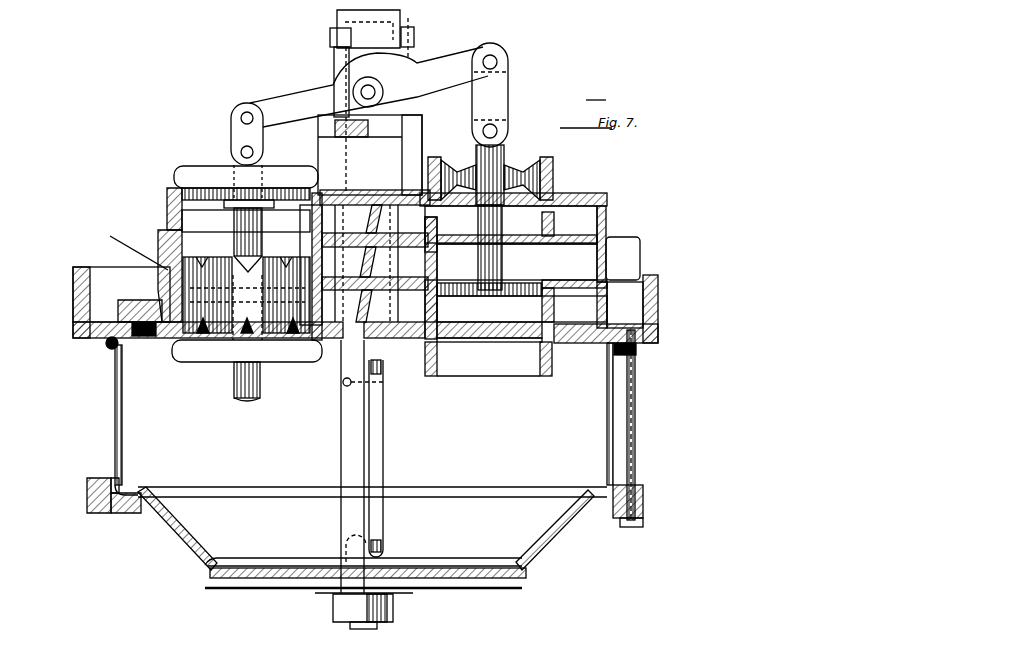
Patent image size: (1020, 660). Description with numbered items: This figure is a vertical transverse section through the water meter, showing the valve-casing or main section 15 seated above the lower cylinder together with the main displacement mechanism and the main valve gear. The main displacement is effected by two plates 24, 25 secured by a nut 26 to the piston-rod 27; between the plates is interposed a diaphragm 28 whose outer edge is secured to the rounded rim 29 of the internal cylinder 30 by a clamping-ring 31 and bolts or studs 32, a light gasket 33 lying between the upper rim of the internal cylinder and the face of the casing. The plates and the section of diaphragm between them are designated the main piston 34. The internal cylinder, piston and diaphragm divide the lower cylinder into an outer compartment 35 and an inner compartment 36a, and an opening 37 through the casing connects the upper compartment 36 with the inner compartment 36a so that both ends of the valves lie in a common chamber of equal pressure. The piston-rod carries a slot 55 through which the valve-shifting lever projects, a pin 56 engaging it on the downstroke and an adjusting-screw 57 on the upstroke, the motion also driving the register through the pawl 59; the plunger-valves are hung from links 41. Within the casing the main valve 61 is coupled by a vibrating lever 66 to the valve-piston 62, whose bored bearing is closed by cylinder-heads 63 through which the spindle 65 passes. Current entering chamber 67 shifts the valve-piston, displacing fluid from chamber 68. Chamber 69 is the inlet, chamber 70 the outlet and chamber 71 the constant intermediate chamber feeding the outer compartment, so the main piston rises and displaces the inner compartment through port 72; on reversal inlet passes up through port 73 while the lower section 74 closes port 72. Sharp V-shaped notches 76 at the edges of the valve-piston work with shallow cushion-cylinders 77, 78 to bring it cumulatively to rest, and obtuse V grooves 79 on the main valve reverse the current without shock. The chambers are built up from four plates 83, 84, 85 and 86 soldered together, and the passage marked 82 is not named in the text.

The main section 15 is at (668, 308).
The plate 24 is at (230, 562).
The plate 25 is at (218, 590).
The nut 26 is at (396, 614).
The piston-rod 27 is at (352, 466).
The diaphragm 28 is at (204, 574).
The rounded rim 29 is at (150, 492).
The internal cylinder 30 is at (114, 418).
The clamping-ring 31 is at (94, 513).
The bolts or studs 32 is at (636, 468).
The gasket 33 is at (106, 346).
The main piston 34 is at (272, 578).
The outer compartment 35 is at (500, 628).
The compartment 36 is at (158, 108).
The inner compartment 36a is at (232, 443).
The opening 37 is at (140, 323).
The links 41 is at (369, 121).
The slot 55 is at (380, 442).
The pin 56 is at (342, 382).
The adjusting-screw 57 is at (384, 540).
The pawl 59 is at (372, 101).
The main valve 61 is at (490, 217).
The valve-piston 62 is at (247, 307).
The cylinder-heads 63 is at (247, 264).
The spindle 65 is at (262, 165).
The vibrating lever 66 is at (369, 87).
The chamber 67 is at (322, 229).
The chamber 68 is at (334, 309).
The inlet chamber 69 is at (576, 229).
The outlet chamber 70 is at (582, 325).
The intermediate chamber 71 is at (576, 275).
The port 72 is at (530, 372).
The port 73 is at (525, 165).
The lower section of main valve 74 is at (486, 298).
The V-shaped notches 76 is at (246, 286).
The cushion-cylinder 77 is at (182, 214).
The cushion-cylinder 78 is at (322, 341).
The V grooves 79 is at (460, 165).
The passage 82 is at (608, 290).
The plate 83 is at (578, 194).
The plate 84 is at (602, 230).
The plate 85 is at (600, 276).
The plate 86 is at (610, 325).